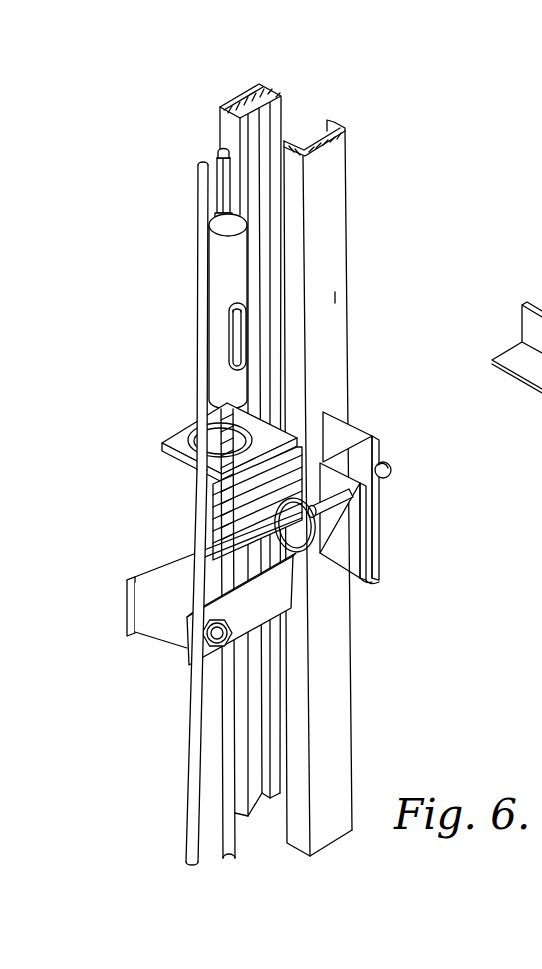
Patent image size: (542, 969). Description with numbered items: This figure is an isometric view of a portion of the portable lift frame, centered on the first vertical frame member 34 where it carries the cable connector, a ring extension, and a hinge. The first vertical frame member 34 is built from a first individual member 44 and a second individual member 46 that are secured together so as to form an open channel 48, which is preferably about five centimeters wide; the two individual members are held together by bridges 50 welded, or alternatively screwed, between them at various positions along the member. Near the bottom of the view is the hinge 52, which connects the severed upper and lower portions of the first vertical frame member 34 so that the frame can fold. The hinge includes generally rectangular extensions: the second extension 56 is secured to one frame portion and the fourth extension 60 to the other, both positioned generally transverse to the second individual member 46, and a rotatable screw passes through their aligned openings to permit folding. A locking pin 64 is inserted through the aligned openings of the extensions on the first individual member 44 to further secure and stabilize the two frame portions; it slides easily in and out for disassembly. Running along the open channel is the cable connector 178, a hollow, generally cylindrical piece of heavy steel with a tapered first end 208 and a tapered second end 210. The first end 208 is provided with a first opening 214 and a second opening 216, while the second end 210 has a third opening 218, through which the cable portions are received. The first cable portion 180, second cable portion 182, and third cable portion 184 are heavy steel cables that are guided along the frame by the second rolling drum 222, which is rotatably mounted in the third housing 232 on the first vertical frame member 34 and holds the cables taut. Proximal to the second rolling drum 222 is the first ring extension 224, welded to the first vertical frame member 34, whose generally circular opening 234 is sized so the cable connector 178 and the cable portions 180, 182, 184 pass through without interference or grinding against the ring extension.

The first vertical frame member 34 is at (336, 264).
The first individual member 44 is at (222, 108).
The second individual member 46 is at (335, 297).
The open channel 48 is at (305, 116).
The bridges 50 is at (303, 451).
The hinge 52 is at (393, 543).
The second extension 56 is at (353, 457).
The fourth extension 60 is at (360, 572).
The locking pin 64 is at (383, 477).
The cable connector 178 is at (227, 283).
The first cable portion 180 is at (195, 773).
The second cable portion 182 is at (218, 150).
The third cable portion 184 is at (227, 152).
The first end 208 is at (228, 230).
The second end 210 is at (207, 396).
The first opening 214 is at (222, 213).
The second opening 216 is at (228, 229).
The third opening 218 is at (215, 437).
The second rolling drum 222 is at (168, 628).
The first ring extension 224 is at (218, 467).
The third housing 232 is at (185, 568).
The circular opening 234 is at (250, 432).